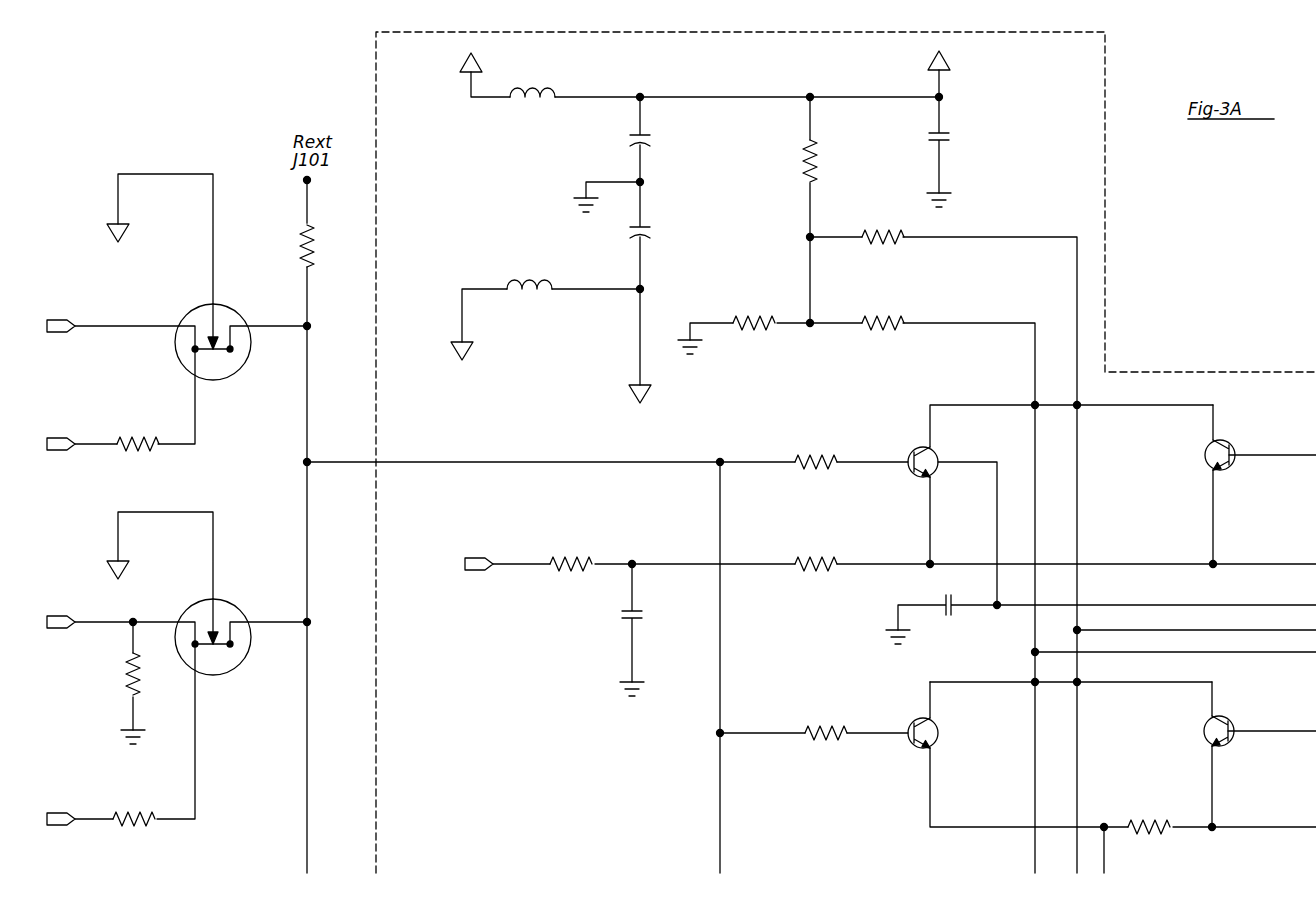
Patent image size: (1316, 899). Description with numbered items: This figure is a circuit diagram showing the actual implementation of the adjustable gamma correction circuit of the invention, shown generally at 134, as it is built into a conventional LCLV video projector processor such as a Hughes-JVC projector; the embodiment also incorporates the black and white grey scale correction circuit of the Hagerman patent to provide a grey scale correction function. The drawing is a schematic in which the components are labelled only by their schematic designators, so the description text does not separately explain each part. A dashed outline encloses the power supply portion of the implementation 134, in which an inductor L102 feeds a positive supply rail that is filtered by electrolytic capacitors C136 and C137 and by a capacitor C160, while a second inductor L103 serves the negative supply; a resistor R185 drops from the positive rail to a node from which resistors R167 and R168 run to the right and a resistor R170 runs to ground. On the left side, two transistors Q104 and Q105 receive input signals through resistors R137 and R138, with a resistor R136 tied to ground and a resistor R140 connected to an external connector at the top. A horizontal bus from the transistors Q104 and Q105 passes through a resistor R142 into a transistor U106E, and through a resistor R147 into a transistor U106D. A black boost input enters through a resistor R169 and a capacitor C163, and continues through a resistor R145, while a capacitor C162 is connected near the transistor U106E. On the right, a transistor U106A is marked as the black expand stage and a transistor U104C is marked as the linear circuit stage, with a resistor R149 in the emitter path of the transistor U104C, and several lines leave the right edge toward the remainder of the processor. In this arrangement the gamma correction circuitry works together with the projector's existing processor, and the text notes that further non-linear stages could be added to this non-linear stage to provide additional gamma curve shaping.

The actual implementation of the adjustable gamma circuit 134 is at (376, 88).
The resistor R140 1K R140 is at (332, 245).
The transistor Q104 is at (162, 282).
The transistor Q105 is at (161, 598).
The resistor R137 220 R137 is at (118, 408).
The resistor R136 75.0 R136 is at (115, 682).
The resistor R138 220 R138 is at (105, 745).
The inductor L102 is at (532, 76).
The inductor L103 is at (542, 315).
The capacitor C136 22uF C136 is at (638, 154).
The capacitor C137 22uF C137 is at (661, 283).
The capacitor C160 0.1uF C160 is at (965, 152).
The resistor R185 140 R185 is at (846, 212).
The resistor R167 47.5 R167 is at (943, 307).
The resistor R168 47.5 R168 is at (922, 350).
The resistor R170 75 R170 is at (744, 332).
The resistor R142 220 R142 is at (814, 460).
The resistor R145 5.1K R145 is at (974, 562).
The resistor R147 220 R147 is at (813, 731).
The resistor R149 300 R149 is at (1209, 835).
The resistor R169 200 R169 is at (527, 567).
The capacitor C162 0.1uF C162 is at (1101, 613).
The capacitor C163 0.1uF C163 is at (658, 630).
The transistor U106E CA3127 U106E is at (966, 507).
The transistor U106D CA3127 U106D is at (979, 754).
The transistor U106A CA3127 black expand U106A is at (1204, 466).
The transistor U104C CA3127 linear circuit U104C is at (1203, 740).